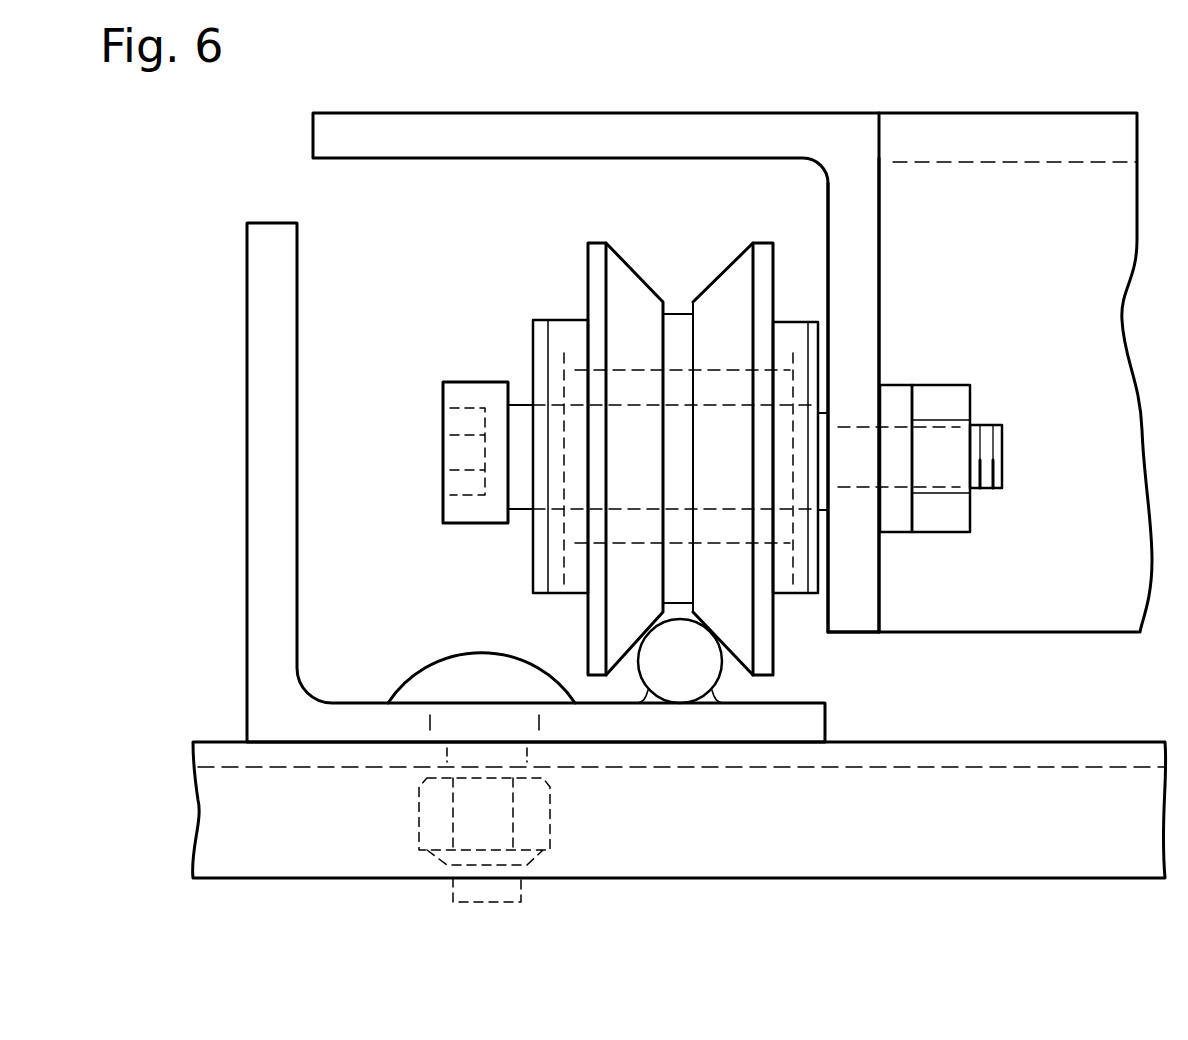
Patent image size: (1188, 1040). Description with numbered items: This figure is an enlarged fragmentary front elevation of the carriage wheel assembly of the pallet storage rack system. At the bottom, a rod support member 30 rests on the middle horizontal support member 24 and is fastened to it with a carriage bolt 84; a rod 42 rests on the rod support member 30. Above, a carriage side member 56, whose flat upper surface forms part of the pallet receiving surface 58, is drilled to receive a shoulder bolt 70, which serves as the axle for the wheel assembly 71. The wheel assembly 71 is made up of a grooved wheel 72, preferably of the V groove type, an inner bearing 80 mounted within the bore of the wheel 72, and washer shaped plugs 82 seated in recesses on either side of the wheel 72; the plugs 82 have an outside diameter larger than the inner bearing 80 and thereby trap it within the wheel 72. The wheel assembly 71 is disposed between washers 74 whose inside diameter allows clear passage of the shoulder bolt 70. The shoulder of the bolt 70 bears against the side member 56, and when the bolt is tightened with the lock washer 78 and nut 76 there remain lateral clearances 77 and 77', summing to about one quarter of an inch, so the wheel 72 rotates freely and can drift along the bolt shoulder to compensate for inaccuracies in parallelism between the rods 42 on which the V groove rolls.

The rod support member 30 is at (262, 248).
The carriage bolt 84 is at (473, 677).
The rod 42 is at (680, 660).
The carriage side member 56 is at (578, 137).
The lateral clearance 77 is at (889, 337).
The pallet receiving surface 58 is at (1052, 122).
The inner bearing 80 is at (640, 372).
The grooved wheel 72 is at (762, 640).
The washer 74 is at (829, 300).
The plug 82 is at (563, 352).
The wheel assembly 71 is at (508, 267).
The lateral clearance 77' is at (445, 426).
The shoulder bolt 70 is at (485, 453).
The lock washer 78 is at (895, 385).
The nut 76 is at (945, 390).
The middle horizontal support member 24 is at (1012, 748).